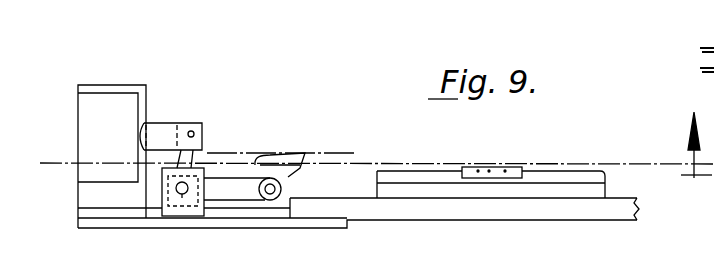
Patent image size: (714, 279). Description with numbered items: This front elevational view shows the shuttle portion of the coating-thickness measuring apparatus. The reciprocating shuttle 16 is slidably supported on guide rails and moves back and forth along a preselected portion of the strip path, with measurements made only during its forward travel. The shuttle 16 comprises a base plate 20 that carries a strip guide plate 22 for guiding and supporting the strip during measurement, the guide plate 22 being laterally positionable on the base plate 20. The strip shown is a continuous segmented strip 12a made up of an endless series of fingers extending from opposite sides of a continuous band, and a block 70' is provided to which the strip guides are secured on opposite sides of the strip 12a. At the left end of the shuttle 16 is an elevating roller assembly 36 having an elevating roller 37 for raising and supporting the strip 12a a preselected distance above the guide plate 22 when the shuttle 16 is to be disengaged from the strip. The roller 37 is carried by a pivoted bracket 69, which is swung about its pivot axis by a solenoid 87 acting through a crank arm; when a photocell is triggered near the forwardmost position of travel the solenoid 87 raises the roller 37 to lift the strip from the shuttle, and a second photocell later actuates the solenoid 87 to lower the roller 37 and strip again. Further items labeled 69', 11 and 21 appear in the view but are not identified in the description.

The elevating roller assembly 36 is at (103, 85).
The solenoid 87 is at (85, 102).
The segmented strip 12a is at (48, 160).
The actuator 69' is at (191, 125).
The pivoted bracket 69 is at (221, 164).
The elevating roller 37 is at (298, 166).
The block 70' is at (487, 149).
The strip guide plate 22 is at (570, 182).
The direction of movement 11 is at (300, 263).
The reciprocating shuttle 16 is at (558, 222).
The base plate 20 is at (609, 217).
The direction arrow 21 is at (710, 248).